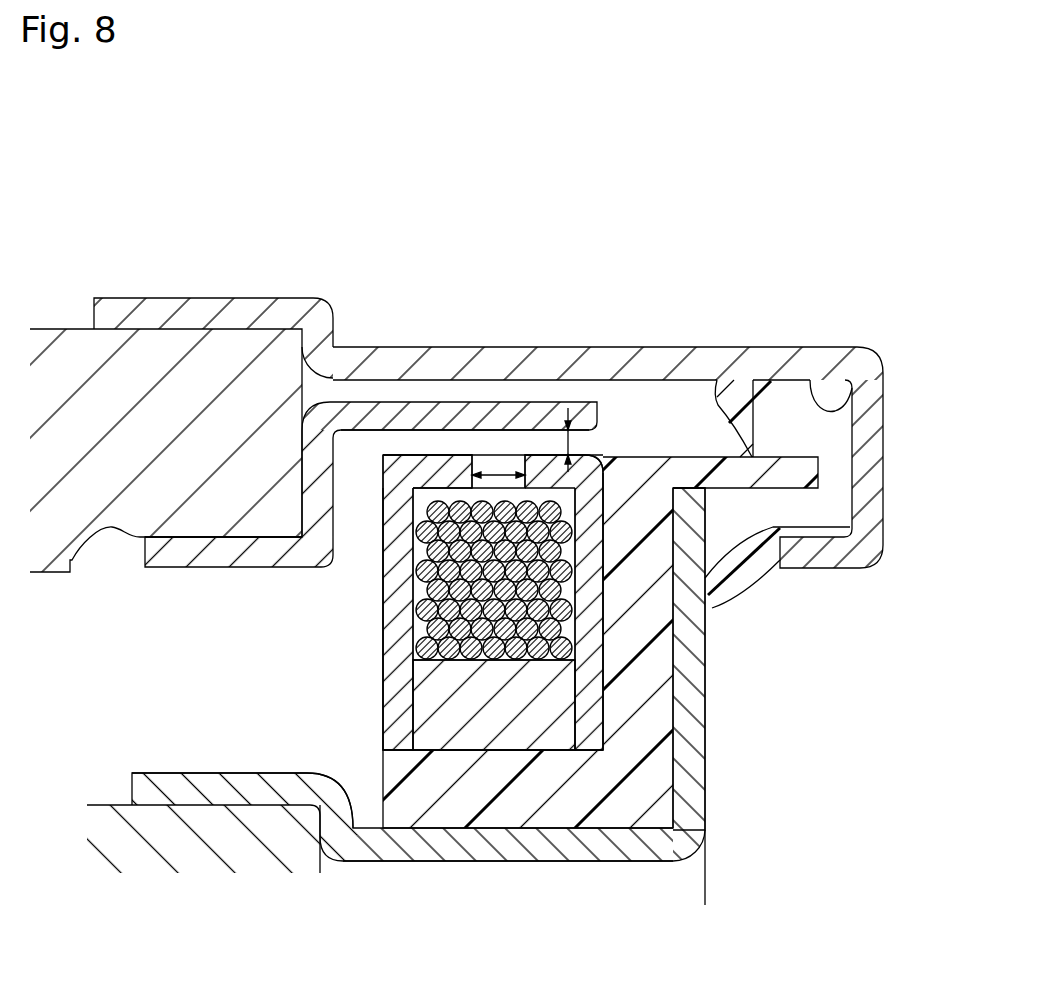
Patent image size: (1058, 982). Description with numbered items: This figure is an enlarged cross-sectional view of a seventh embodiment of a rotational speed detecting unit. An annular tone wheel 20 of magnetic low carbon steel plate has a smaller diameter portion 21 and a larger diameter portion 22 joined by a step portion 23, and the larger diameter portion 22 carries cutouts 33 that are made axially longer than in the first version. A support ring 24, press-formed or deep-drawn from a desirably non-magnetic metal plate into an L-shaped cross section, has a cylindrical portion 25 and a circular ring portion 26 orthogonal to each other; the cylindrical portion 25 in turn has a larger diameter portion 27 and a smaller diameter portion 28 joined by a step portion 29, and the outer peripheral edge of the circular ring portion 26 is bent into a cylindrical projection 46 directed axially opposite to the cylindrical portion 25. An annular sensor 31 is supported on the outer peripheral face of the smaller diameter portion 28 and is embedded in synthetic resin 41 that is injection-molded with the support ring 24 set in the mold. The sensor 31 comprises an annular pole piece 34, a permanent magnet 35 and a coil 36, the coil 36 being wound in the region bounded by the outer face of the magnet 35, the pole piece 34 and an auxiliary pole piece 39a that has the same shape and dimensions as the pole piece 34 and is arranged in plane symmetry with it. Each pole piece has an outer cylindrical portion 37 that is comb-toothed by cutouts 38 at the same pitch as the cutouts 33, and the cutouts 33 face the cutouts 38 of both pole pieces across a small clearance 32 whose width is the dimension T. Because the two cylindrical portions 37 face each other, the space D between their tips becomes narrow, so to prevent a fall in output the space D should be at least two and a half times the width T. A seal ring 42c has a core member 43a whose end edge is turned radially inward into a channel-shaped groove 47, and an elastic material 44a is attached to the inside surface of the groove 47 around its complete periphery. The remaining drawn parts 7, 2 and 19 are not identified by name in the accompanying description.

The sleeve 7 is at (77, 355).
The core member 43a is at (157, 312).
The step portion 23 is at (302, 460).
The larger diameter portion 22 is at (347, 412).
The cutouts 33 is at (380, 418).
The small clearance 32 is at (435, 443).
The cylindrical portion 37 is at (537, 472).
The seal ring 42c is at (646, 355).
The elastic material 44a is at (716, 380).
The groove 47 is at (812, 393).
The cylindrical projection 46 is at (815, 398).
The width dimension T is at (596, 390).
The space D is at (472, 480).
The cutouts 38 is at (601, 463).
The tone wheel 20 is at (212, 557).
The smaller diameter portion 21 is at (153, 557).
The auxiliary pole piece 39a is at (398, 590).
The sensor 31 is at (379, 665).
The pole piece 34 is at (592, 722).
The coil 36 is at (557, 595).
The permanent magnet 35 is at (517, 725).
The support ring 24 is at (690, 700).
The circular ring portion 26 is at (690, 783).
The smaller diameter portion 28 is at (410, 833).
The synthetic resin 41 is at (643, 807).
The cylindrical portion 25 is at (583, 842).
The larger diameter portion 27 is at (168, 782).
The step portion 29 is at (345, 830).
The base body 2 is at (127, 812).
The recess 19 is at (238, 745).